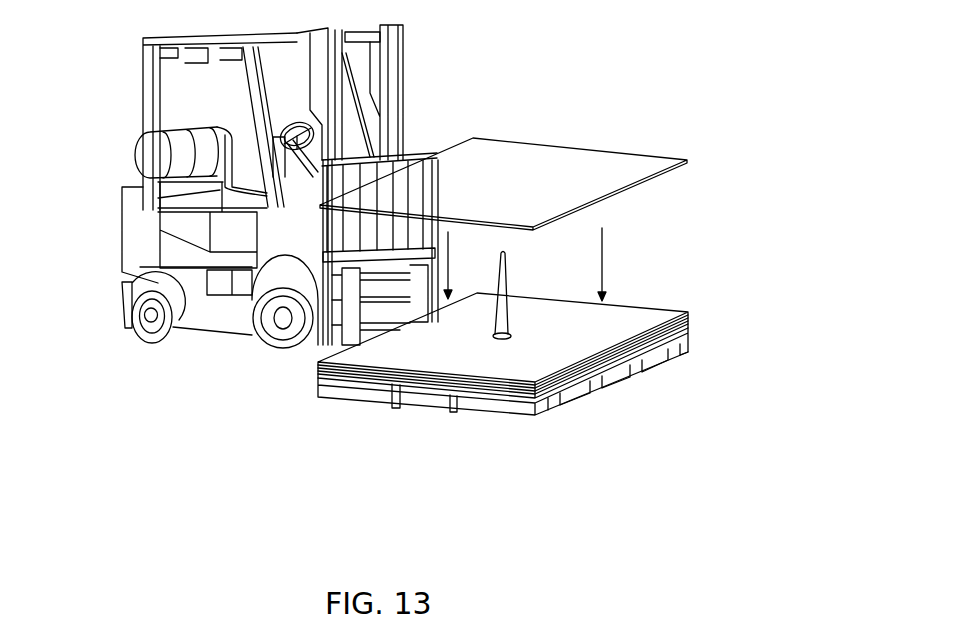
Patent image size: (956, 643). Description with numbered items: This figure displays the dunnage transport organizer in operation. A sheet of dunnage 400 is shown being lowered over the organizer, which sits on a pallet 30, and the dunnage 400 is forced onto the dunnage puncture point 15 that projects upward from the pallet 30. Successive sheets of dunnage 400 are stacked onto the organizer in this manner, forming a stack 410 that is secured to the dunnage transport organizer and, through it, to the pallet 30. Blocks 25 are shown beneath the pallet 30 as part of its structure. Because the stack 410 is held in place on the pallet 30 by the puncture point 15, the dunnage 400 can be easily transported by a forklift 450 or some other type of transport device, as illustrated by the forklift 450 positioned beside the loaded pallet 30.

The forklift 450 is at (121, 215).
The dunnage 400 is at (653, 173).
The dunnage puncture point 15 is at (509, 278).
The stack 410 is at (690, 333).
The pallet 30 is at (590, 395).
The pallet block 25 is at (453, 413).